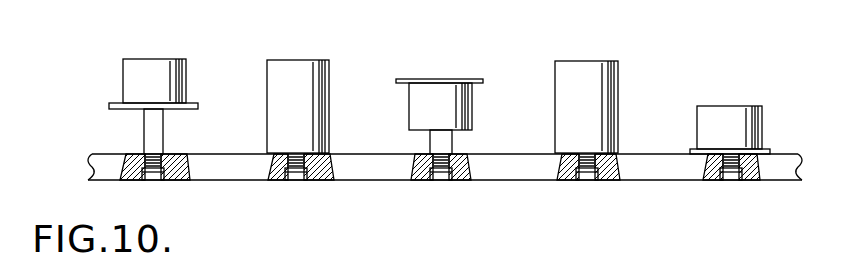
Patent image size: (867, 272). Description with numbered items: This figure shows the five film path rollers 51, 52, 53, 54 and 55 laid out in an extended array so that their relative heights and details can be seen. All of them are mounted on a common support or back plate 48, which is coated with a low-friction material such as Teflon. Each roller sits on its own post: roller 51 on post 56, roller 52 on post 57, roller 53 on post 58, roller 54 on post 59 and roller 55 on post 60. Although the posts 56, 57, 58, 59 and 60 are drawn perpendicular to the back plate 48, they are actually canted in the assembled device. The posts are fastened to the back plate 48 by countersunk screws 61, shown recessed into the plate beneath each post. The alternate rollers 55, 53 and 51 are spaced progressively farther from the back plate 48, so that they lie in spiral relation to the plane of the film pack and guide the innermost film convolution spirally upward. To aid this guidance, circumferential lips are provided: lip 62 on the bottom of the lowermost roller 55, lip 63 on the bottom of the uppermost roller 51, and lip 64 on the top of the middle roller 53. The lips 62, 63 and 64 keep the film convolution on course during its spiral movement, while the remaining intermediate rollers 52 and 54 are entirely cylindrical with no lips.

The back plate 48 is at (513, 172).
The film path roller 51 is at (142, 65).
The film path roller 52 is at (300, 66).
The film path roller 53 is at (428, 92).
The film path roller 54 is at (592, 72).
The film path roller 55 is at (720, 115).
The post 56 is at (155, 135).
The post 57 is at (297, 153).
The post 58 is at (442, 141).
The post 59 is at (591, 152).
The post 60 is at (734, 153).
The countersunk screw 61 is at (158, 182).
The circumferential lip 62 is at (697, 148).
The circumferential lip 63 is at (190, 103).
The circumferential lip 64 is at (398, 85).